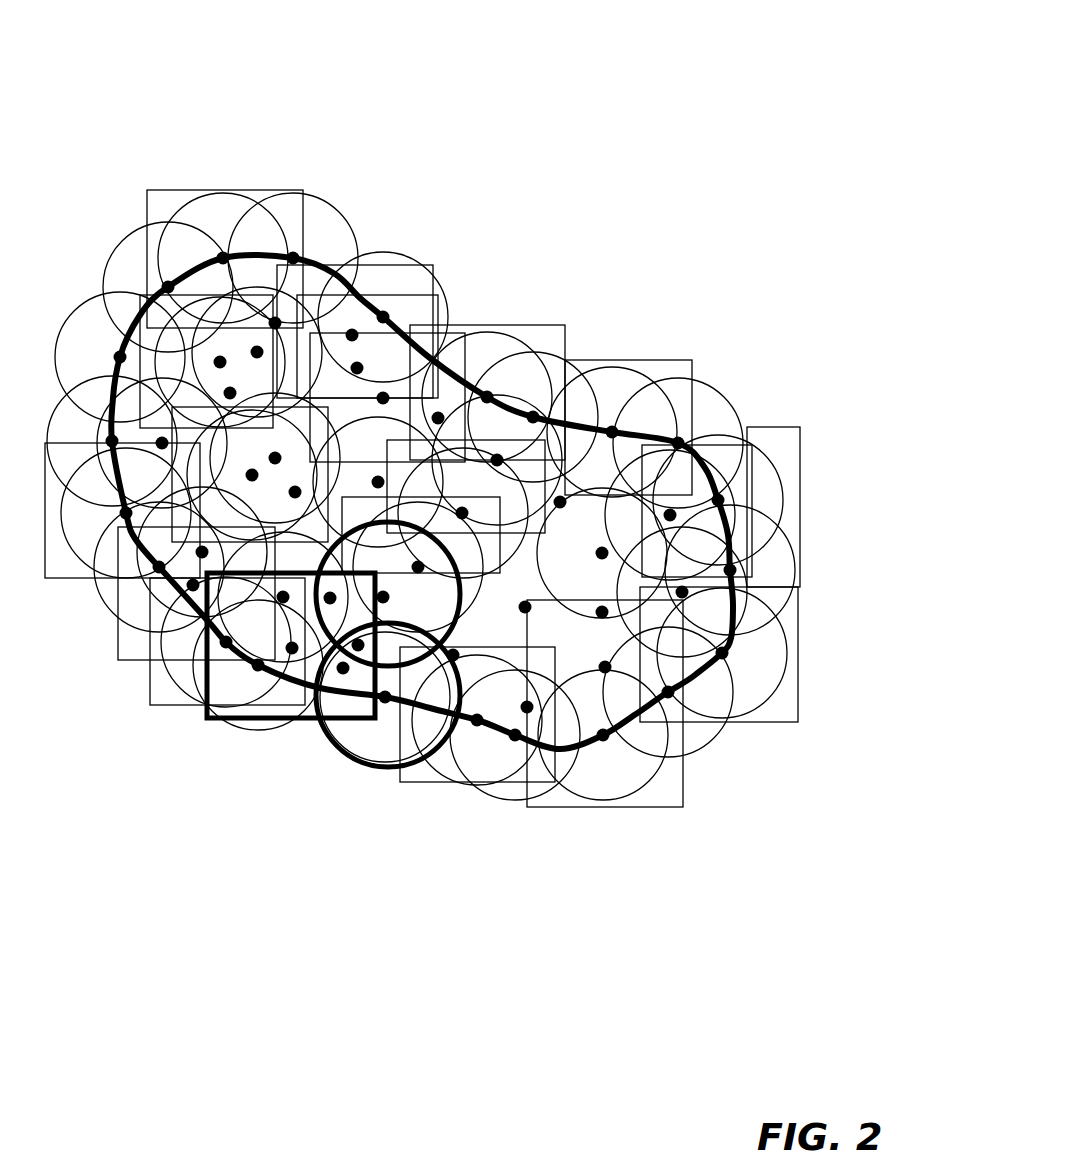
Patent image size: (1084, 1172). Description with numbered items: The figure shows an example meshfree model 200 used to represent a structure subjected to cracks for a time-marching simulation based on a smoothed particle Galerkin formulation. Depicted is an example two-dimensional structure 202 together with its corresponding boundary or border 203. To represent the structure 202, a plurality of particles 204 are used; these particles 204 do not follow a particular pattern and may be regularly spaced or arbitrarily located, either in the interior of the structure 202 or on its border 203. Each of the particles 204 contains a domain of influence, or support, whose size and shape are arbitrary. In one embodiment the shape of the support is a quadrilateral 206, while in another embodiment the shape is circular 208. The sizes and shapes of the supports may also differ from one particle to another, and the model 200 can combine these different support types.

The meshfree model 200 is at (876, 51).
The two-dimensional structure Ω 202 is at (356, 401).
The boundary or border Γ 203 is at (163, 605).
The particles 204 is at (538, 717).
The quadrilateral support 206 is at (780, 438).
The circular support 208 is at (338, 757).